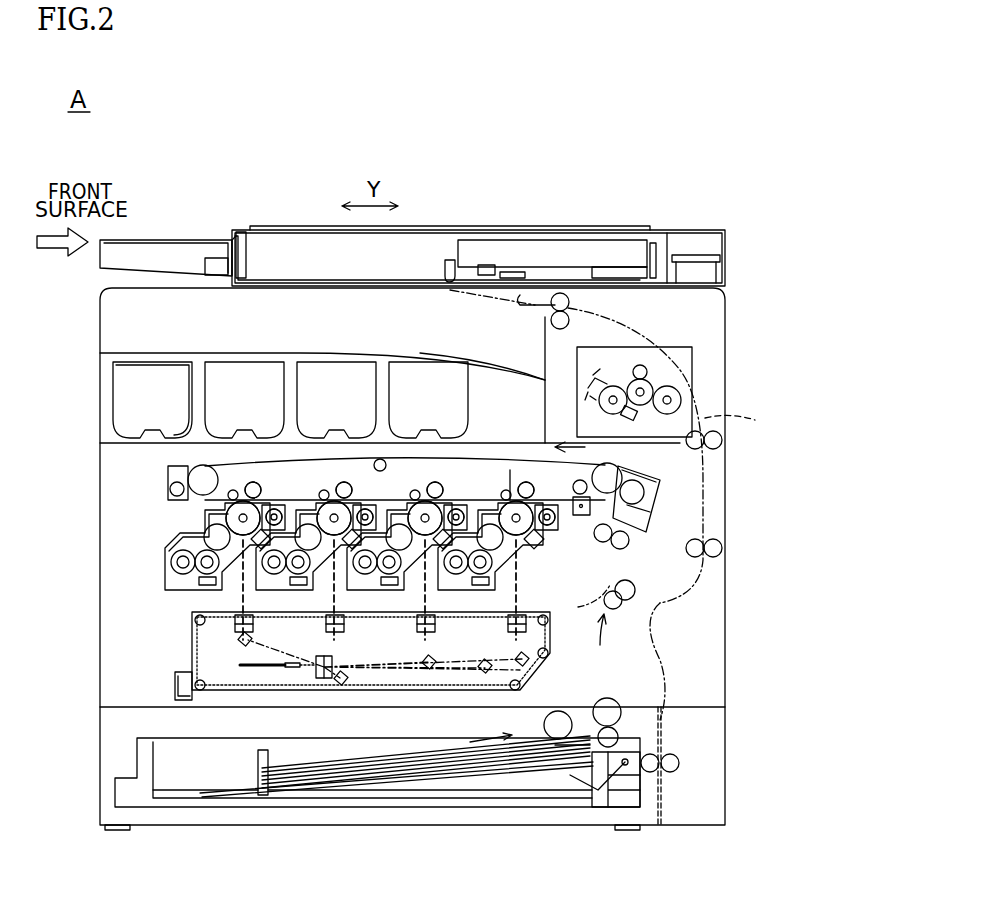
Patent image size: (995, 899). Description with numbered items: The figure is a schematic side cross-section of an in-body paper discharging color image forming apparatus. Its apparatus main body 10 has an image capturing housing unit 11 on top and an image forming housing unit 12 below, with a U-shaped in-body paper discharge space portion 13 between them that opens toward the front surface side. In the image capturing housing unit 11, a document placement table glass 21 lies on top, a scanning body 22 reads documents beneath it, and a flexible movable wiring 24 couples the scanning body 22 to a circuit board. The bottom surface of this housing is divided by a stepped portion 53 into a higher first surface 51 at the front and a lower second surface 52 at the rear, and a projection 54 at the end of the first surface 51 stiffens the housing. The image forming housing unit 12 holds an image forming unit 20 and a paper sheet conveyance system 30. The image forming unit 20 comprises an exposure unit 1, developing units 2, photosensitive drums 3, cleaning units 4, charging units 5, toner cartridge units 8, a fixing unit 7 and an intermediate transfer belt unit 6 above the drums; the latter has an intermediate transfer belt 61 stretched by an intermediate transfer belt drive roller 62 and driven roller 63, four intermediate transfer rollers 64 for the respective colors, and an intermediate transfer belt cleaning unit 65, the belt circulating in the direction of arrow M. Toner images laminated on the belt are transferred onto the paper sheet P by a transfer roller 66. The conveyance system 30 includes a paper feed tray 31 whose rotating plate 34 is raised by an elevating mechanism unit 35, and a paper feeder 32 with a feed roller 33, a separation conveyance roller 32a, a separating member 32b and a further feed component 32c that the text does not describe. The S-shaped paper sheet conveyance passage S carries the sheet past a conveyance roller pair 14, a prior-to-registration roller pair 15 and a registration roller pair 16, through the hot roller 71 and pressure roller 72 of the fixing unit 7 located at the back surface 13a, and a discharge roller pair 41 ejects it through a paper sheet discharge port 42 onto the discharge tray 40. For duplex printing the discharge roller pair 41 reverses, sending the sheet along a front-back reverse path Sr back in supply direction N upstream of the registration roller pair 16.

The exposure unit 1 is at (552, 631).
The developing units 2 is at (170, 552).
The photosensitive drums 3 is at (228, 512).
The cleaning units 4 is at (280, 520).
The charging units 5 is at (245, 580).
The intermediate transfer belt unit 6 is at (486, 452).
The fixing unit 7 is at (704, 381).
The toner cartridge units 8 is at (157, 370).
The apparatus main body 10 is at (95, 602).
The image capturing housing unit 11 is at (727, 260).
The image forming housing unit 12 is at (105, 520).
The in-body paper discharge space portion 13 is at (108, 312).
The back surface 13a is at (543, 345).
The conveyance roller pair 14 is at (715, 547).
The prior-to-registration roller pair 15 is at (636, 590).
The registration roller pair 16 is at (603, 544).
The image forming unit 20 is at (92, 428).
The document placement table glass 21 is at (475, 228).
The scanning body 22 is at (556, 252).
The movable wiring 24 is at (655, 262).
The paper sheet conveyance system 30 is at (721, 472).
The paper feed tray 31 is at (390, 816).
The paper feeder 32 is at (680, 763).
The separation conveyance roller 32a is at (608, 698).
The separating member 32b is at (620, 737).
The separation pad 32c is at (585, 735).
The feed roller 33 is at (552, 712).
The rotating plate 34 is at (475, 793).
The elevating mechanism unit 35 is at (615, 792).
The discharge tray 40 is at (380, 352).
The discharge roller pair 41 is at (569, 302).
The paper sheet discharge port 42 is at (545, 323).
The first surface 51 is at (238, 266).
The second surface 52 is at (505, 275).
The stepped portion 53 is at (460, 270).
The projection 54 is at (450, 258).
The intermediate transfer belt 61 is at (512, 468).
The intermediate transfer belt drive roller 62 is at (612, 472).
The intermediate transfer belt driven roller 63 is at (205, 470).
The intermediate transfer rollers 64 is at (262, 496).
The intermediate transfer belt cleaning unit 65 is at (168, 475).
The transfer roller 66 is at (660, 494).
The hot roller 71 is at (648, 388).
The pressure roller 72 is at (682, 400).
The movement direction M is at (572, 458).
The supply direction N is at (597, 644).
The paper sheet P is at (452, 753).
The paper sheet conveyance passage S is at (585, 605).
The front-back reverse path Sr is at (743, 420).